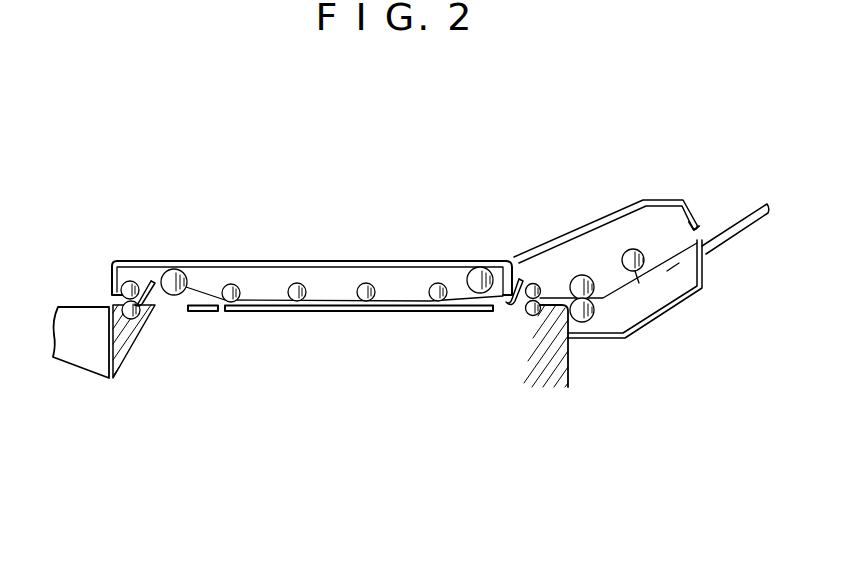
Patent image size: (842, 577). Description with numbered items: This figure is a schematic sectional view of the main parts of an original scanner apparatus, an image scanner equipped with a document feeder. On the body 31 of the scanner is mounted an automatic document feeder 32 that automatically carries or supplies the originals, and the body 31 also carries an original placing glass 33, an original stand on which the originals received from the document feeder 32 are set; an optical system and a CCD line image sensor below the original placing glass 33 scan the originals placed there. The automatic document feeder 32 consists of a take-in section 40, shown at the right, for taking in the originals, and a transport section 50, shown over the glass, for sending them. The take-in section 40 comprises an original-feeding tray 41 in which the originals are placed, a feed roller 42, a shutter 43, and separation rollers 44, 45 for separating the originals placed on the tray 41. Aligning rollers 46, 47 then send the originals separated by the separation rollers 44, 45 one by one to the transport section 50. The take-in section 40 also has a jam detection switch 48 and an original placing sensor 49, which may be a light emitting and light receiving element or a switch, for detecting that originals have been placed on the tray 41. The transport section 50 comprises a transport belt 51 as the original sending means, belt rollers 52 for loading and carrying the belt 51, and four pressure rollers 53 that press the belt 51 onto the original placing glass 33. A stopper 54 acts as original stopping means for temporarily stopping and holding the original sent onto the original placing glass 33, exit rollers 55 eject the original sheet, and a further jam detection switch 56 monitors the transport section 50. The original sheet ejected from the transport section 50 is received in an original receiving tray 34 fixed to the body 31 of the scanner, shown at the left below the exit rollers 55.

The body 31 is at (120, 327).
The automatic document feeder 32 is at (371, 183).
The original placing glass 33 is at (327, 313).
The original receiving tray 34 is at (102, 366).
The take-in section 40 is at (577, 224).
The original-feeding tray 41 is at (728, 250).
The feed roller 42 is at (636, 255).
The shutter 43 is at (667, 272).
The separation roller 44 is at (584, 278).
The separation roller 45 is at (594, 313).
The aligning roller 46 is at (525, 312).
The aligning roller 47 is at (530, 316).
The jam detection switch 48 is at (525, 291).
The original placing sensor 49 is at (702, 224).
The transport section 50 is at (339, 256).
The transport belt 51 is at (433, 260).
The belt roller 52 is at (180, 275).
The pressure roller 53 is at (233, 286).
The stopper 54 is at (207, 313).
The exit roller 55 is at (130, 282).
The jam detection switch 56 is at (151, 282).